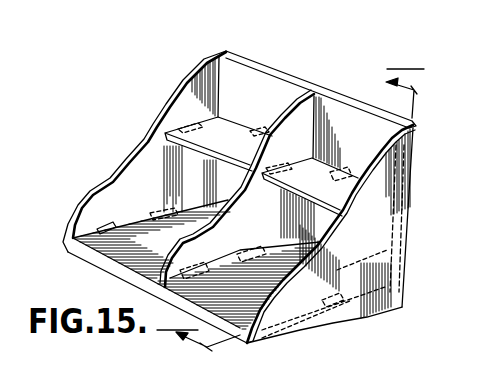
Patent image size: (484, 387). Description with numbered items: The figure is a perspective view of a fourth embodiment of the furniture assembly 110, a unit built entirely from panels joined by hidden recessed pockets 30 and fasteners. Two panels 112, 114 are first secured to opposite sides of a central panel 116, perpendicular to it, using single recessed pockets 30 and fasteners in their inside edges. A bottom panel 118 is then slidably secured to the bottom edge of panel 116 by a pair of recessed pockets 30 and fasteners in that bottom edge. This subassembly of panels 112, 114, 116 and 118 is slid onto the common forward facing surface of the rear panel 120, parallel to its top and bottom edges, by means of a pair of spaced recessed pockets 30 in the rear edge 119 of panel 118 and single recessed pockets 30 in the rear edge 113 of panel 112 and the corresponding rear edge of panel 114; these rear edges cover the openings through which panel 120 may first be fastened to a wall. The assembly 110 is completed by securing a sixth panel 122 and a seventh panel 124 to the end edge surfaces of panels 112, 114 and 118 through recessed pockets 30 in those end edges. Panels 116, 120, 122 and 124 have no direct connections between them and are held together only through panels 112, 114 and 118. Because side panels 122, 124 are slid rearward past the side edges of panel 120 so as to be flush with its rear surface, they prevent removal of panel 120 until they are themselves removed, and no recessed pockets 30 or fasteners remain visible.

The assembly 110 is at (151, 65).
The rear panel 120 is at (253, 66).
The sixth panel 122 is at (137, 177).
The panel 116 is at (300, 109).
The rear edge 113 is at (220, 118).
The panel 112 is at (202, 137).
The panel 114 is at (322, 192).
The seventh panel 124 is at (374, 276).
The panel 118 is at (123, 254).
The rear edge 119 is at (318, 253).
The recessed pockets 30 is at (328, 303).